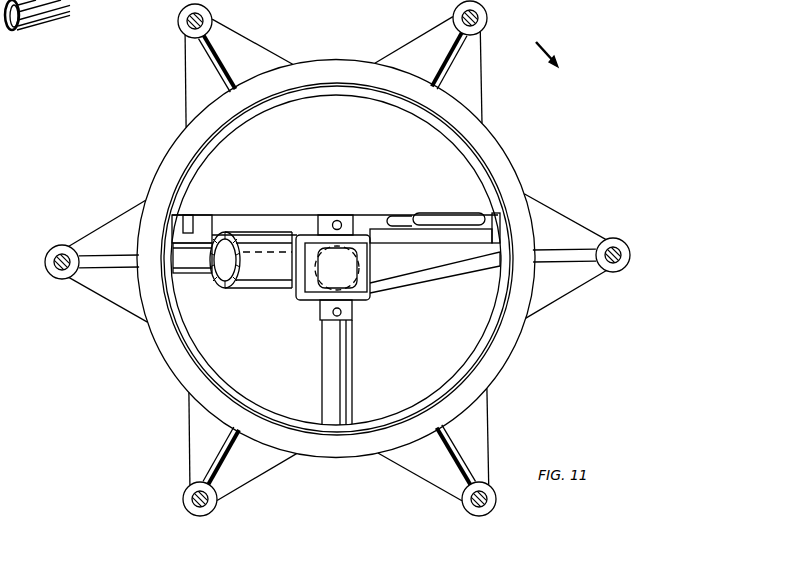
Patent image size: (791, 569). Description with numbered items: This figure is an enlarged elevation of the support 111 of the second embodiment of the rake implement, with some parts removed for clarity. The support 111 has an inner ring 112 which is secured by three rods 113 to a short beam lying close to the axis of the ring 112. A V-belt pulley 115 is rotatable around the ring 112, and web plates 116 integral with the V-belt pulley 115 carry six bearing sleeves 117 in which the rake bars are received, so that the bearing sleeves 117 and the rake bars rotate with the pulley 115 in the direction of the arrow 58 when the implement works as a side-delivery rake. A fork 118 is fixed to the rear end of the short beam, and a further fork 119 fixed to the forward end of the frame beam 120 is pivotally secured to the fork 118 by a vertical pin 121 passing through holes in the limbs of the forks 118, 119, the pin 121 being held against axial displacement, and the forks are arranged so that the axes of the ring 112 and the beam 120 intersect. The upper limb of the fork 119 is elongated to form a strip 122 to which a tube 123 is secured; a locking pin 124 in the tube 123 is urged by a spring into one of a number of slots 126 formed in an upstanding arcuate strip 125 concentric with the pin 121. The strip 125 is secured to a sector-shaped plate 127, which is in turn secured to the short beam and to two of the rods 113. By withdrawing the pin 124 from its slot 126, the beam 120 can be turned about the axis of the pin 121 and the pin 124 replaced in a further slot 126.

The arrow 58 is at (546, 52).
The support 111 is at (513, 157).
The inner ring 112 is at (458, 144).
The rods 113 is at (185, 275).
The V-belt pulley 115 is at (176, 367).
The web plates 116 is at (113, 233).
The bearing sleeves 117 is at (488, 19).
The fork 118 is at (358, 243).
The further fork 119 is at (305, 234).
The frame beam 120 is at (262, 288).
The vertical pin 121 is at (346, 221).
The strip 122 is at (442, 233).
The tube 123 is at (435, 218).
The locking pin 124 is at (399, 216).
The arcuate strip 125 is at (270, 215).
The slots 126 is at (215, 221).
The sector-shaped plate 127 is at (185, 245).